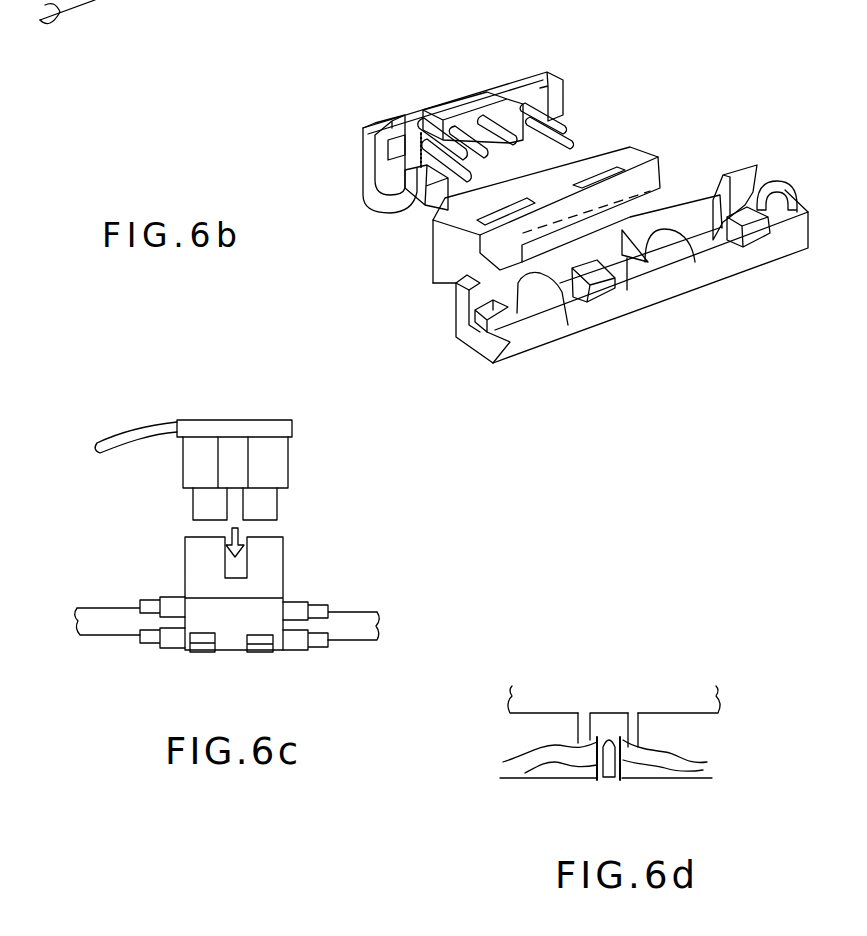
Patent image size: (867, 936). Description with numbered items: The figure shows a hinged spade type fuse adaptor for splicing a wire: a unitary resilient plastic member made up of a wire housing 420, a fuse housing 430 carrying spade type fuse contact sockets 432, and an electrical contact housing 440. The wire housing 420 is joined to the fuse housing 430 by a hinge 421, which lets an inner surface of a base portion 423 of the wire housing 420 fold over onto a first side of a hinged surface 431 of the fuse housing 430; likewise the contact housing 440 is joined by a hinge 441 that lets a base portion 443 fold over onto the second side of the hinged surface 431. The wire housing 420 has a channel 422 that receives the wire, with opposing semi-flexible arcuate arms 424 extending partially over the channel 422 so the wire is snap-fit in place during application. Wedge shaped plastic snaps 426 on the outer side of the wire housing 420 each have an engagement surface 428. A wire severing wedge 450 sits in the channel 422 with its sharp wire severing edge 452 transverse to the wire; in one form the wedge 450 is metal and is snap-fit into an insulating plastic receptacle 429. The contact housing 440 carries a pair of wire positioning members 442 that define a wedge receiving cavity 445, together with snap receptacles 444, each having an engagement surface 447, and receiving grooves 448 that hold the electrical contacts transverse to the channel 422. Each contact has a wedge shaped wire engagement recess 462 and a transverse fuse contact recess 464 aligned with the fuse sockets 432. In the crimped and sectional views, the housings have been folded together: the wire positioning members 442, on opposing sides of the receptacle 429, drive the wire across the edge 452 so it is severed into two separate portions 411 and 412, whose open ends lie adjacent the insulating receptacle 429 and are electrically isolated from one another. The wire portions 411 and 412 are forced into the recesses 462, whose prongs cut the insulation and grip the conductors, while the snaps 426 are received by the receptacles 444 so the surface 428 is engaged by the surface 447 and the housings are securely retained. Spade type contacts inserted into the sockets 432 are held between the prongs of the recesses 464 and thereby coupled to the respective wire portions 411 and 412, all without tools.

In FIG. 6c, the severed wire portion 411 is at (128, 627).
In FIG. 6d, the severed wire portion 411 is at (528, 757).
In FIG. 6c, the severed wire portion 412 is at (338, 628).
In FIG. 6d, the severed wire portion 412 is at (687, 762).
In FIG. 6b, the wire housing 420 is at (492, 362).
In FIG. 6b, the hinge 421 is at (650, 188).
In FIG. 6b, the channel 422 is at (512, 340).
In FIG. 6b, the base portion 423 is at (695, 190).
In FIG. 6b, the arcuate arms 424 is at (193, 0).
In FIG. 6b, the wedge shaped plastic snaps 426 is at (612, 290).
In FIG. 6b, the engagement surface 428 is at (735, 255).
In FIG. 6b, the insulating plastic receptacle 429 is at (645, 270).
In FIG. 6d, the insulating plastic receptacle 429 is at (597, 781).
In FIG. 6b, the fuse housing 430 is at (470, 240).
In FIG. 6b, the hinged surface 431 is at (442, 258).
In FIG. 6b, the fuse contact sockets 432 is at (590, 172).
In FIG. 6b, the electrical contact housing 440 is at (615, 130).
In FIG. 6b, the hinge 441 is at (653, 130).
In FIG. 6d, the wire positioning members 442 is at (581, 712).
In FIG. 6b, the base portion 443 is at (663, 170).
In FIG. 6b, the snap receptacles 444 is at (383, 167).
In FIG. 6b, the wedge receiving cavity 445 is at (470, 122).
In FIG. 6b, the engagement surface 447 is at (403, 153).
In FIG. 6b, the receiving groove 448 is at (380, 195).
In FIG. 6d, the wire severing wedge 450 is at (615, 780).
In FIG. 6b, the wire severing edge 452 is at (697, 237).
In FIG. 6d, the wire severing edge 452 is at (600, 738).
In FIG. 6b, the wire engagement recess 462 is at (407, 137).
In FIG. 6b, the fuse contact recess 464 is at (437, 200).